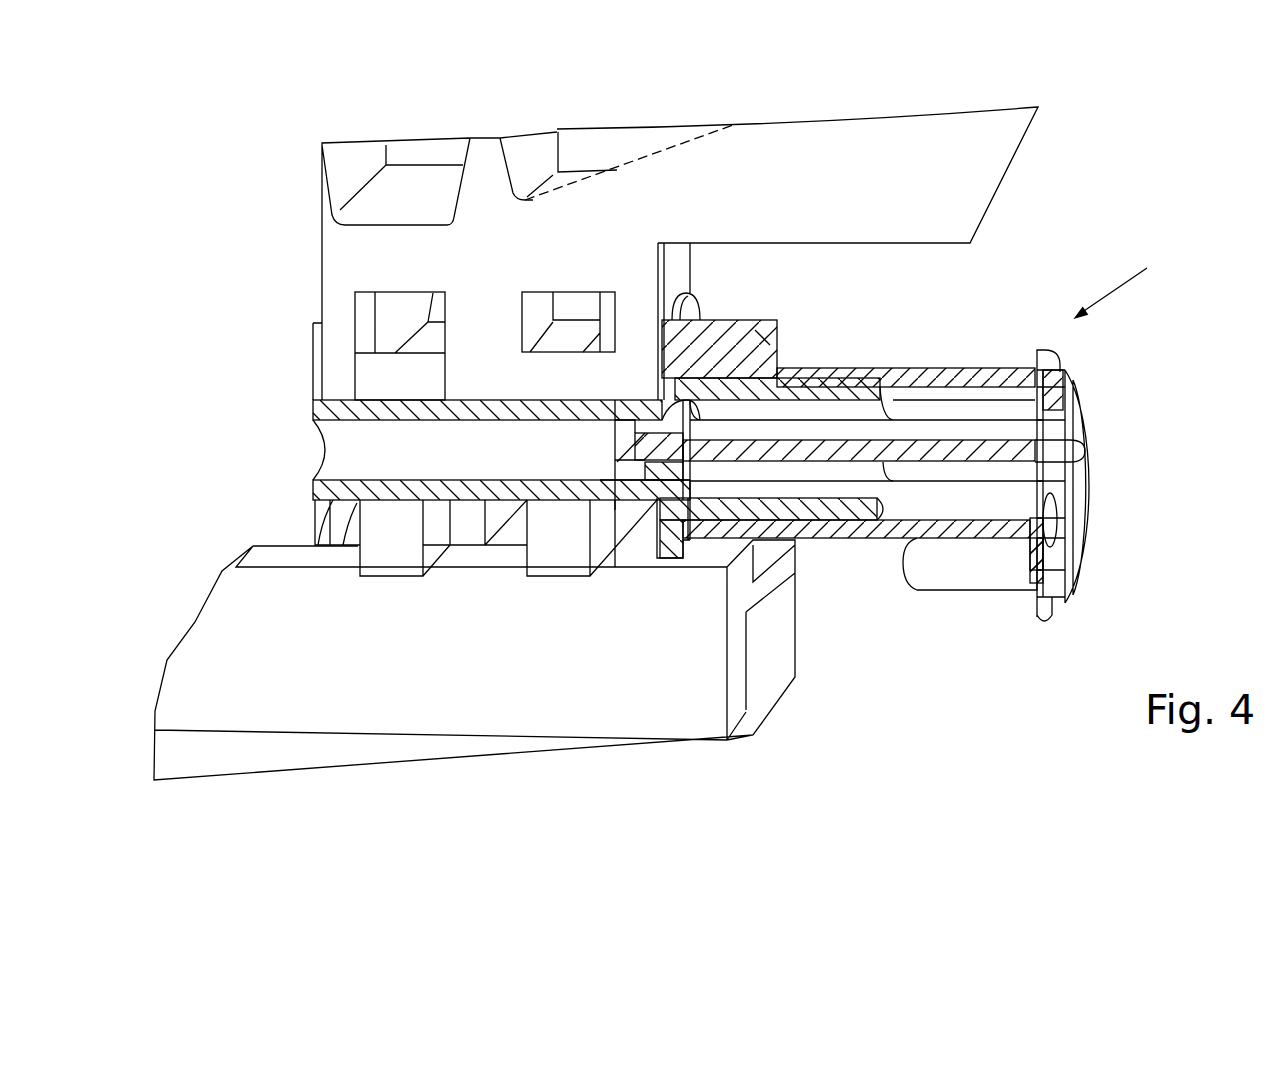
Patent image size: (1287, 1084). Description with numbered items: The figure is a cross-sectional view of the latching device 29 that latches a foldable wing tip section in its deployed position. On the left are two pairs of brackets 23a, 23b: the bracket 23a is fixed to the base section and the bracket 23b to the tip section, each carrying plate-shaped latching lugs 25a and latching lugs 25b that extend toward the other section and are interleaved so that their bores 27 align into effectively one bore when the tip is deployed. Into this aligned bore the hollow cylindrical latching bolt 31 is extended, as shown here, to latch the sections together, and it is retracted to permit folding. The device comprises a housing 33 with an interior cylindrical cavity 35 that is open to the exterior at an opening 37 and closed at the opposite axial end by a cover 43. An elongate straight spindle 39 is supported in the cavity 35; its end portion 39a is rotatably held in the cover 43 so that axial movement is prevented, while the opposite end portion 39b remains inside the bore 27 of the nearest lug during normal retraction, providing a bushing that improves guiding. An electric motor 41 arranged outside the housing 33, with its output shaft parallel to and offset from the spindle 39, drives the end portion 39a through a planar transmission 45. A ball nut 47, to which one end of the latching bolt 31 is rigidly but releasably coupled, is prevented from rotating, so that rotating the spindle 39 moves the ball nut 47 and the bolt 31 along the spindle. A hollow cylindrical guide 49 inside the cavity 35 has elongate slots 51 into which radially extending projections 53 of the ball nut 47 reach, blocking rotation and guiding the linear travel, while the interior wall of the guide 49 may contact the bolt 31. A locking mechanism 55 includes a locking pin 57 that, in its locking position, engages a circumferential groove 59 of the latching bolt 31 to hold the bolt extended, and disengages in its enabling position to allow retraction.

The bracket 23a is at (648, 708).
The bracket 23b is at (968, 128).
The latching lug 25a is at (378, 520).
The latching lug 25b is at (327, 357).
The bore 27 is at (327, 395).
The latching device 29 is at (1119, 278).
The latching bolt 31 is at (323, 473).
The housing 33 is at (980, 380).
The interior cylindrical cavity 35 is at (917, 503).
The opening 37 is at (702, 375).
The spindle 39 is at (910, 455).
The end portion of the spindle 39a is at (1085, 448).
The end portion of the spindle 39b is at (615, 455).
The electric motor 41 is at (982, 573).
The cover 43 is at (1063, 390).
The planar transmission 45 is at (1058, 512).
The ball nut 47 is at (683, 470).
The hollow cylindrical guide 49 is at (857, 382).
The elongate slot 51 is at (760, 380).
The radially extending projection 53 is at (662, 396).
The locking mechanism 55 is at (760, 337).
The locking pin 57 is at (667, 243).
The circumferential groove 59 is at (662, 398).